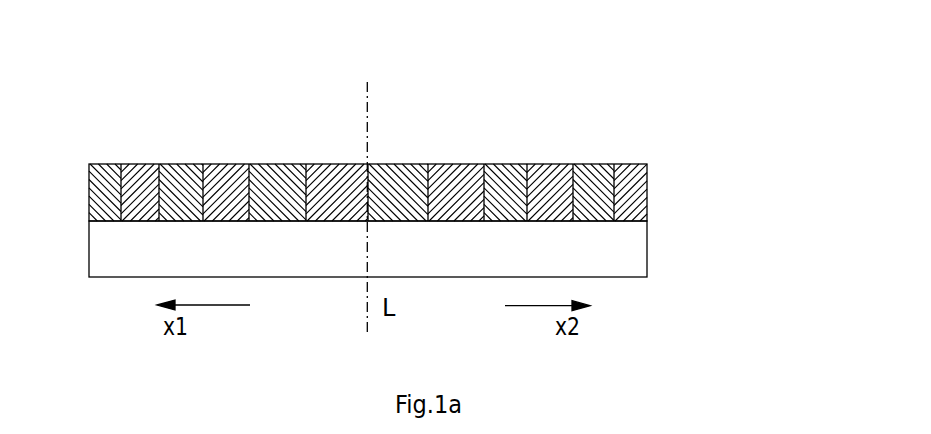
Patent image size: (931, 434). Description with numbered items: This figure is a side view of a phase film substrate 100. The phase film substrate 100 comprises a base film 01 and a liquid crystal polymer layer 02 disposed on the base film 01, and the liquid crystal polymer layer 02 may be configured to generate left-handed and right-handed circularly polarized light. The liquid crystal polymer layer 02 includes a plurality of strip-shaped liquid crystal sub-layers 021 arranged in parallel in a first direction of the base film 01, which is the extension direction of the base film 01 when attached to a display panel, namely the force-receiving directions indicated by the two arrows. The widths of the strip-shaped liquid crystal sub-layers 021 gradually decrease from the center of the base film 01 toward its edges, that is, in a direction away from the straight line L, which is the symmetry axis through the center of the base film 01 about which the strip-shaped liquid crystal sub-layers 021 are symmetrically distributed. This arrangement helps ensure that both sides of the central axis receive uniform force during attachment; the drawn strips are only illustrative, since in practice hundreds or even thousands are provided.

The phase film substrate 100 is at (142, 24).
The base film 01 is at (660, 249).
The liquid crystal polymer layer 02 is at (660, 193).
The strip-shaped liquid crystal sub-layers 021 is at (216, 152).